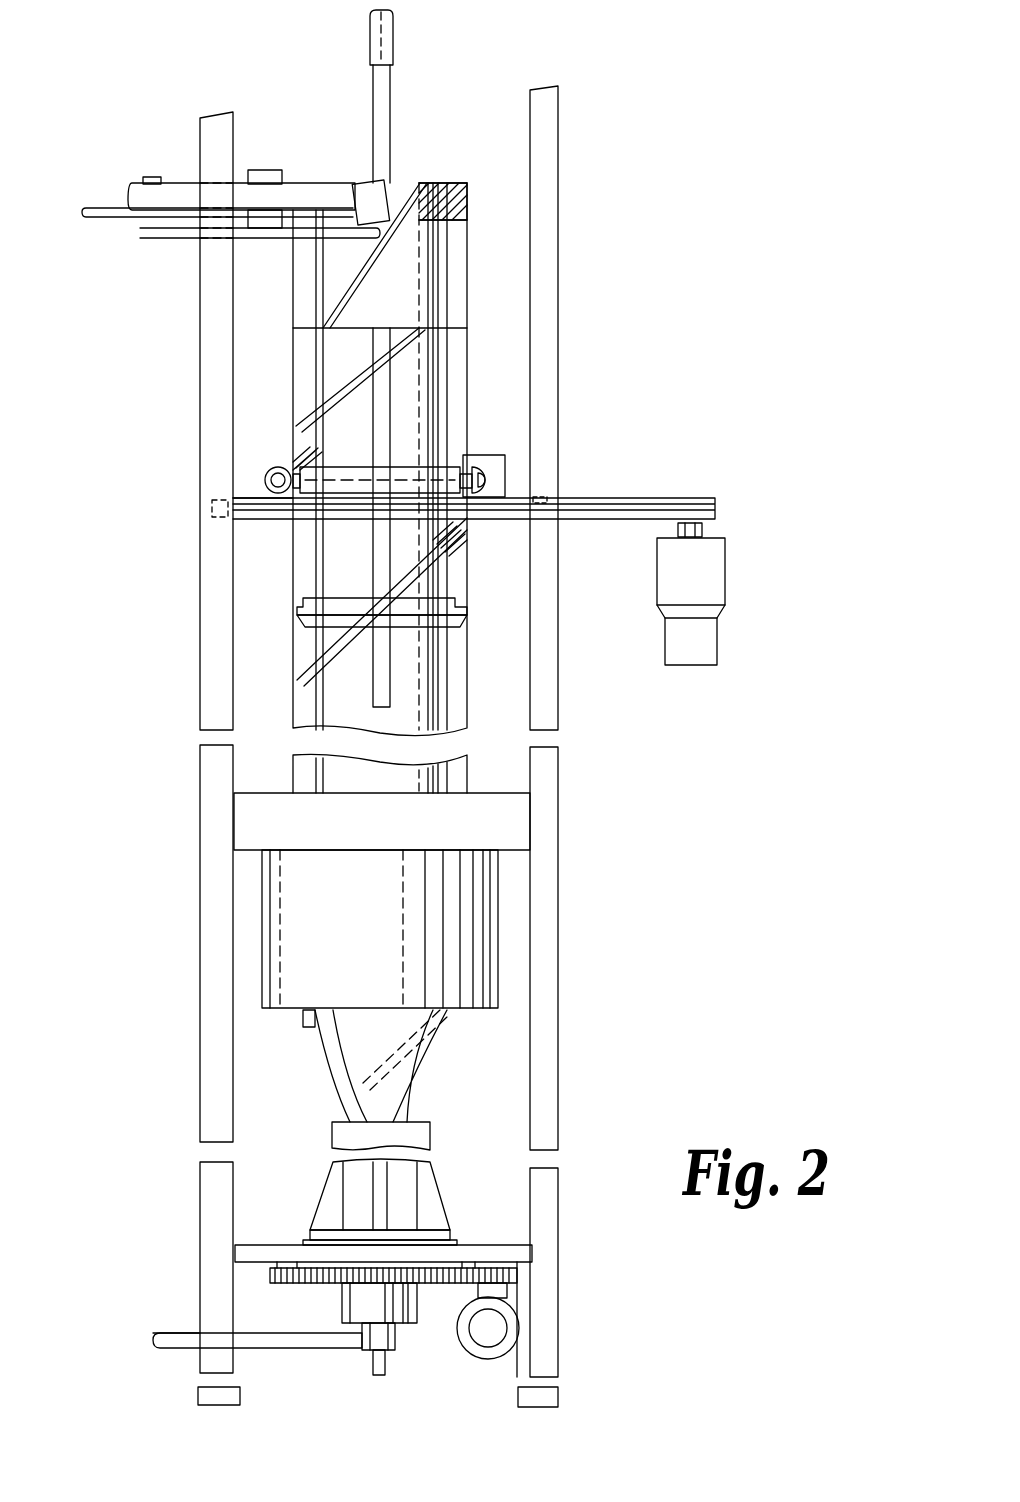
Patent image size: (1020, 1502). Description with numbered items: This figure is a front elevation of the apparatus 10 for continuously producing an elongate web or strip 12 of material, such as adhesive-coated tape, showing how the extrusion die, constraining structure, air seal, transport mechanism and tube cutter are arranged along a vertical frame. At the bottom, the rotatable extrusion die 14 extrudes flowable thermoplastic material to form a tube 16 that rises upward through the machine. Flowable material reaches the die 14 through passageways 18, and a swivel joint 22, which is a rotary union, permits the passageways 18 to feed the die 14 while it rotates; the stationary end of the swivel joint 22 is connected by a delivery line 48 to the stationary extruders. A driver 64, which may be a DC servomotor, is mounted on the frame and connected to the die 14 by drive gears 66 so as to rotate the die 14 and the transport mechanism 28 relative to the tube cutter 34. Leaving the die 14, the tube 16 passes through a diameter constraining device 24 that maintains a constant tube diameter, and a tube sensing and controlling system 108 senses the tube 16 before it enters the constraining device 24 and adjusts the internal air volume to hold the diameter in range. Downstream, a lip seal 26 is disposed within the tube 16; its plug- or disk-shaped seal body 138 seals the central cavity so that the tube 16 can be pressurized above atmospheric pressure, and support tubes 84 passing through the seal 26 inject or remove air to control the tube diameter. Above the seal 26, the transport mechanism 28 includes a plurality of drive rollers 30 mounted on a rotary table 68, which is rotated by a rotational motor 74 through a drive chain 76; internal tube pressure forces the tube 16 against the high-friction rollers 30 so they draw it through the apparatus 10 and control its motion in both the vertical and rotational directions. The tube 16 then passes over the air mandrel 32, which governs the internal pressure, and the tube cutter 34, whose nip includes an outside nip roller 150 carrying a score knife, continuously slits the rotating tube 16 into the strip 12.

The apparatus 10 is at (605, 892).
The strip 12 is at (128, 198).
The extrusion die 14 is at (427, 1133).
The tube 16 is at (298, 767).
The passageways 18 is at (182, 1331).
The swivel joint 22 is at (345, 1305).
The diameter constraining device 24 is at (280, 933).
The lip seal 26 is at (455, 600).
The transport mechanism 28 is at (249, 496).
The rollers 30 is at (293, 450).
The mandrel 32 is at (467, 328).
The tube cutter 34 is at (393, 196).
The delivery line 48 is at (170, 1350).
The driver 64 is at (553, 1315).
The drive gears 66 is at (515, 1270).
The rotary table 68 is at (513, 495).
The rotational motor 74 is at (717, 580).
The drive chain 76 is at (615, 510).
The support tubes 84 is at (380, 133).
The tube sensing and controlling system 108 is at (307, 1030).
The seal body 138 is at (455, 625).
The outside nip roller 150 is at (367, 187).